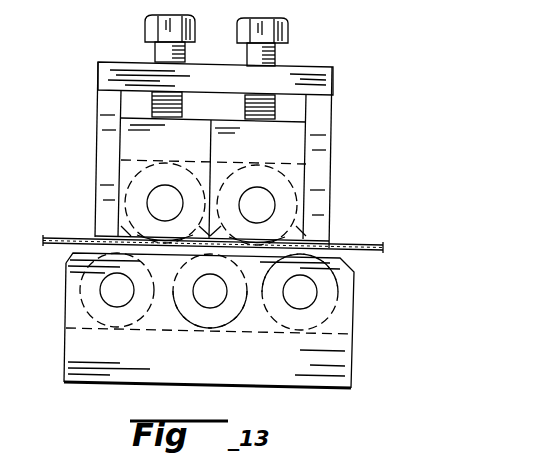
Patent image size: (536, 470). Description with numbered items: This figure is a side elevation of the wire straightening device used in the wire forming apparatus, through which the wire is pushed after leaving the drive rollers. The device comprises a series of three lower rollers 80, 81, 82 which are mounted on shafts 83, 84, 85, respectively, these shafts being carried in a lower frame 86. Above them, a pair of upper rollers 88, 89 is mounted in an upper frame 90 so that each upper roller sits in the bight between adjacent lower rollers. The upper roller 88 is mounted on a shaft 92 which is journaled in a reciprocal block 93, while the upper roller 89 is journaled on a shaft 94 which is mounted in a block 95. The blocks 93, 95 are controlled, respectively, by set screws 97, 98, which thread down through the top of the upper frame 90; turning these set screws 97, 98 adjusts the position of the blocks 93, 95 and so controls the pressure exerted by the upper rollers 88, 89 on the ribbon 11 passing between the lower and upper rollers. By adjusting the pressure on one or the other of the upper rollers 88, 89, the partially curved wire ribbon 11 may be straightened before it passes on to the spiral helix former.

The ribbon 11 is at (360, 247).
The lower roller 80 is at (73, 276).
The lower roller 81 is at (233, 320).
The lower roller 82 is at (338, 305).
The shaft 83 is at (127, 298).
The shaft 84 is at (220, 299).
The shaft 85 is at (310, 300).
The lower frame 86 is at (338, 358).
The upper roller 88 is at (127, 180).
The upper roller 89 is at (305, 180).
The upper frame 90 is at (312, 153).
The shaft 92 is at (163, 200).
The reciprocal block 93 is at (183, 146).
The shaft 94 is at (262, 205).
The block 95 is at (274, 150).
The set screw 97 is at (162, 50).
The set screw 98 is at (275, 50).